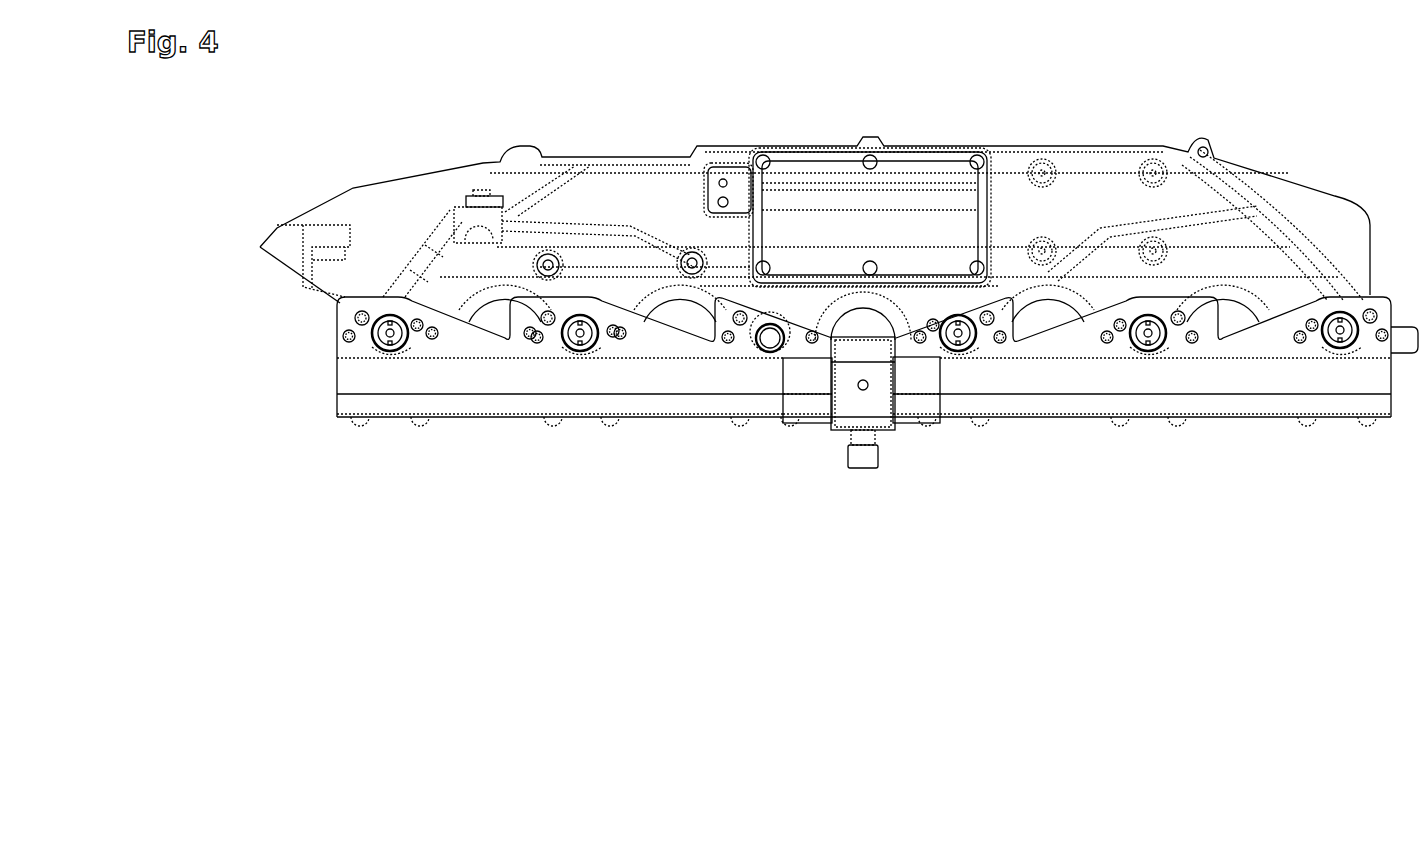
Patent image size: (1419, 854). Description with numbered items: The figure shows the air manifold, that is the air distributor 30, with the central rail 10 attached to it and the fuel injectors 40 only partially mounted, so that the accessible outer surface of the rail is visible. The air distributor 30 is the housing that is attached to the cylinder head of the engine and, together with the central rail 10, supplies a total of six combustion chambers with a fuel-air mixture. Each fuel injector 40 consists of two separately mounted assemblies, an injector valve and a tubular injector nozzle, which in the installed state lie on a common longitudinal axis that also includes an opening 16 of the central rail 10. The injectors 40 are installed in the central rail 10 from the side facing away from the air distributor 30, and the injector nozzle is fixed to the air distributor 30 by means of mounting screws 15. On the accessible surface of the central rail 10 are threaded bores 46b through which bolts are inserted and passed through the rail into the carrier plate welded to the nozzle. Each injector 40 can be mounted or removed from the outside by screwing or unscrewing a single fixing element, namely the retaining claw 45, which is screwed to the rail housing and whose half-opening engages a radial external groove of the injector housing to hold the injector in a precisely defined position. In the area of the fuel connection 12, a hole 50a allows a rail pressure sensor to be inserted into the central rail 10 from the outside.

The central rail 10 is at (297, 363).
The air distributor 30 is at (205, 247).
The mounting screws 15 is at (340, 312).
The fuel injector 40 is at (392, 370).
The retaining claw 45 is at (375, 347).
The threaded bores 46b is at (613, 324).
The opening 16 is at (772, 370).
The fuel connection 12 is at (878, 472).
The hole 50a is at (872, 386).